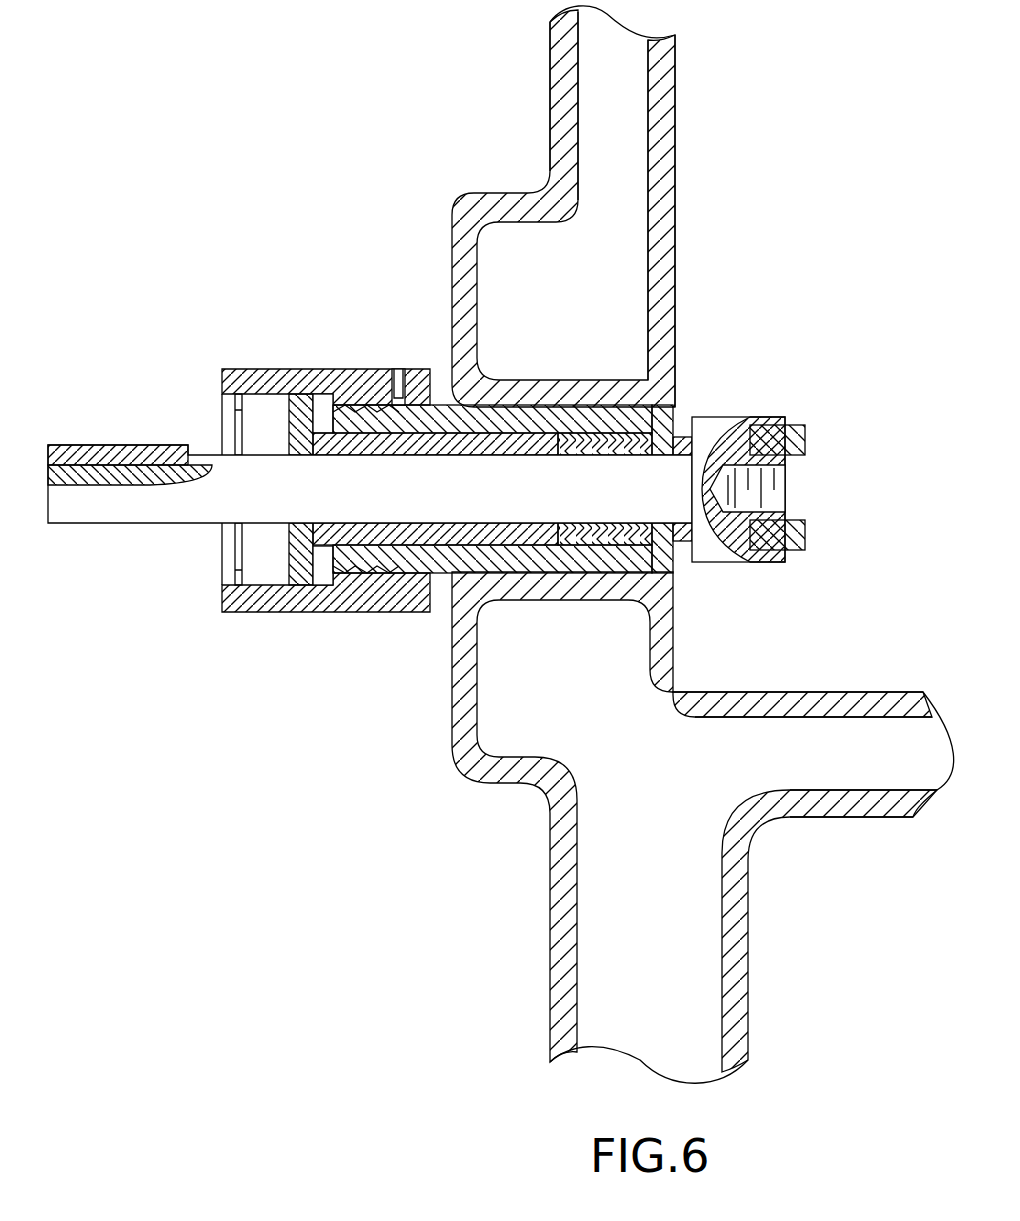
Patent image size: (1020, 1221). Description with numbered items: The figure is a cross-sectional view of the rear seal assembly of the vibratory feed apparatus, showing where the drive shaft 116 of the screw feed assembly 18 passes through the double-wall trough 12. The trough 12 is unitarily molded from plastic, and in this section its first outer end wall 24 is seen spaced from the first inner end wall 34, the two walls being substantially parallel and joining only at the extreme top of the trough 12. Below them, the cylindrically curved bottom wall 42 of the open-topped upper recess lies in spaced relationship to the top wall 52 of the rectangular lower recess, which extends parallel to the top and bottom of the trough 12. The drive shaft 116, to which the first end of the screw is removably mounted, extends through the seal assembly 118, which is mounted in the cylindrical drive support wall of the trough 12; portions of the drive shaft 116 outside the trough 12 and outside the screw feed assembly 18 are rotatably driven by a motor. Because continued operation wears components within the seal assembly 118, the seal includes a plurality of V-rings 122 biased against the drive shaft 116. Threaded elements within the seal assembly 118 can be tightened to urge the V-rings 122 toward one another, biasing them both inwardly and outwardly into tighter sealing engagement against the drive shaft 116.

The trough 12 is at (703, 544).
The first outer end wall 24 is at (550, 70).
The first inner end wall 34 is at (676, 62).
The screw feed assembly 18 is at (460, 510).
The cylindrically curved bottom wall 42 is at (830, 692).
The top wall 52 is at (850, 817).
The drive shaft 116 is at (762, 562).
The seal assembly 118 is at (350, 612).
The V-rings 122 is at (675, 570).